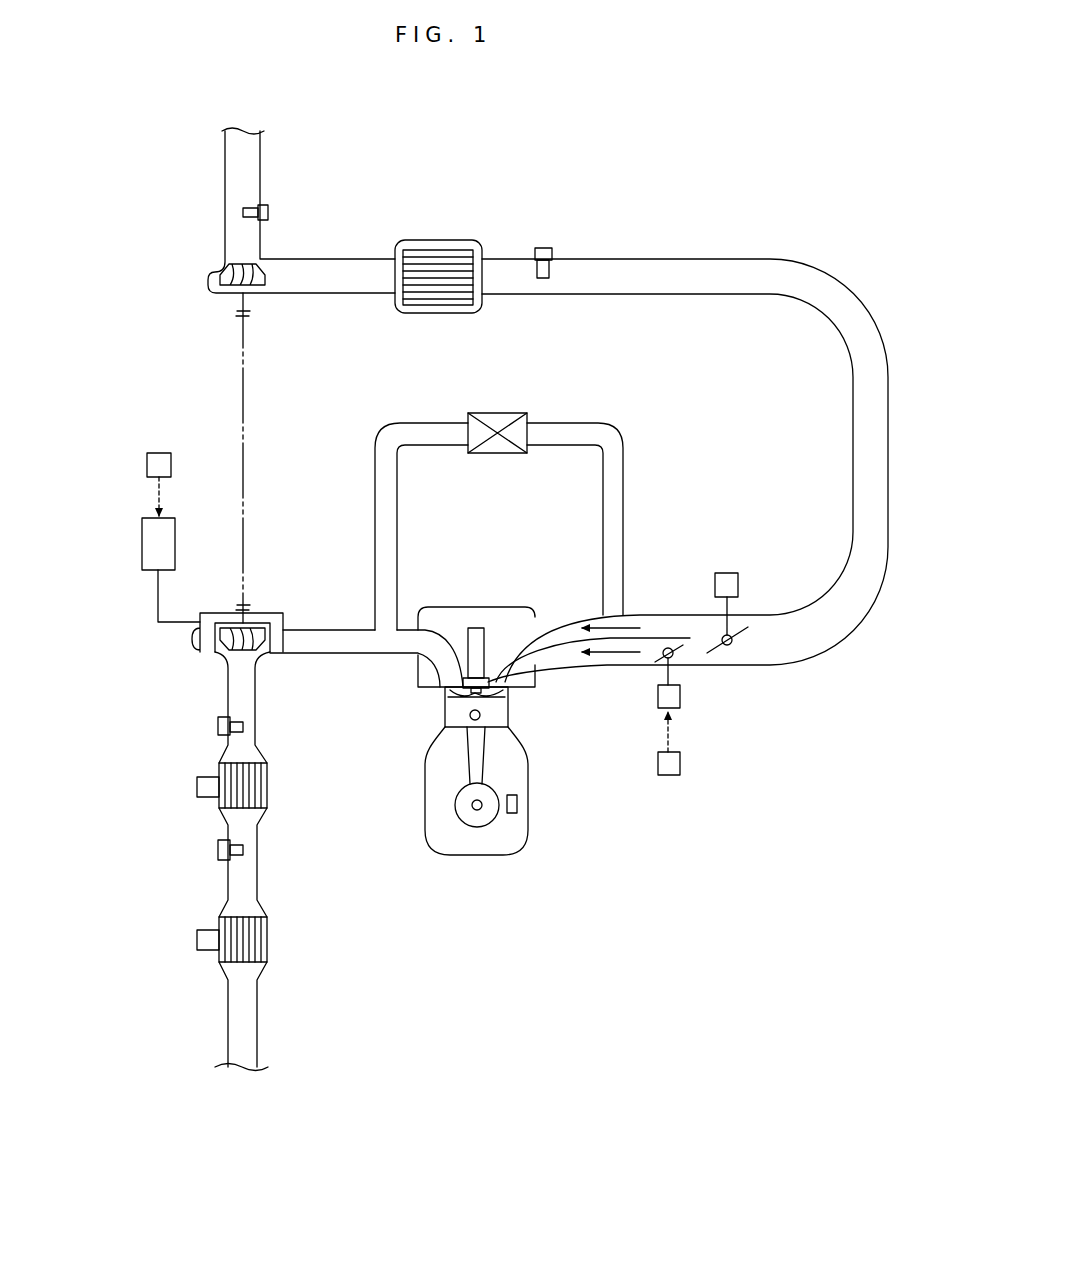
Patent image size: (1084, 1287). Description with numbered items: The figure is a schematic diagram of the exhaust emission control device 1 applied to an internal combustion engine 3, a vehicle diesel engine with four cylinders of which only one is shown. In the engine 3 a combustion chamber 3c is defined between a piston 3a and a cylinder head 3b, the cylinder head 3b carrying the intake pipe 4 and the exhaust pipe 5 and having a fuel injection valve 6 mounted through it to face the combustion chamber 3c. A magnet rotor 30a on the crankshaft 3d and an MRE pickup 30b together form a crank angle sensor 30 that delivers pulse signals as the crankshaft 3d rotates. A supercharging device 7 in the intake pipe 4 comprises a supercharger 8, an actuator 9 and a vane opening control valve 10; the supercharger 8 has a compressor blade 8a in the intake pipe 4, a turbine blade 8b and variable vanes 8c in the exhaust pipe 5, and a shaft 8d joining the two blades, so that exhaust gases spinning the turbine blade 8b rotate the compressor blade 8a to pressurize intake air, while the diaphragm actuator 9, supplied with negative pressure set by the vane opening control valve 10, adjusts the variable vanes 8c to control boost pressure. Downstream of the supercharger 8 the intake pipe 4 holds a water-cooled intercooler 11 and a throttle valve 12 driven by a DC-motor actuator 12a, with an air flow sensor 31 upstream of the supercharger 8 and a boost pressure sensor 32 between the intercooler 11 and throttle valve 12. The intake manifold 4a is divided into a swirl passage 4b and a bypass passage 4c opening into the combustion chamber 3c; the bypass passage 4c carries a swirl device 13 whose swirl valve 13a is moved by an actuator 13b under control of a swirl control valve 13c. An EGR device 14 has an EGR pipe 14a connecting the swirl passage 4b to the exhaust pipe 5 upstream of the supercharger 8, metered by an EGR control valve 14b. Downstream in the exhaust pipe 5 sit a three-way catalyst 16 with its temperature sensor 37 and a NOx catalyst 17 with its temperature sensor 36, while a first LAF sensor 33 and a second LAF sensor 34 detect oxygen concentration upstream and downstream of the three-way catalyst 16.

The exhaust emission control device 1 is at (141, 1115).
The internal combustion engine 3 is at (493, 752).
The piston 3a is at (515, 726).
The cylinder head 3b is at (503, 617).
The combustion chamber 3c is at (510, 700).
The crankshaft 3d is at (482, 806).
The intake pipe 4 is at (226, 170).
The intake manifold 4a is at (668, 615).
The swirl passage 4b is at (600, 652).
The bypass passage 4c is at (620, 663).
The exhaust pipe 5 is at (340, 655).
The fuel injection valve 6 is at (473, 627).
The supercharging device 7 is at (91, 759).
The supercharger 8 is at (239, 448).
The compressor blade 8a is at (270, 282).
The turbine blade 8b is at (262, 655).
The variable vanes 8c is at (208, 648).
The shaft 8d is at (243, 425).
The actuator 9 is at (142, 546).
The vane opening control valve 10 is at (147, 465).
The intercooler 11 is at (440, 240).
The throttle valve 12 is at (745, 627).
The actuator 12a is at (736, 573).
The swirl device 13 is at (729, 726).
The swirl valve 13a is at (685, 648).
The actuator 13b is at (680, 700).
The swirl control valve 13c is at (763, 712).
The EGR device 14 is at (463, 472).
The EGR pipe 14a is at (375, 508).
The EGR control valve 14b is at (482, 455).
The three-way catalyst 16 is at (267, 786).
The NOx catalyst 17 is at (267, 941).
The crank angle sensor 30 is at (501, 869).
The magnet rotor 30a is at (478, 828).
The MRE pickup 30b is at (512, 814).
The air flow sensor 31 is at (268, 212).
The boost pressure sensor 32 is at (545, 248).
The first LAF sensor 33 is at (218, 730).
The second LAF sensor 34 is at (218, 852).
The NOx catalyst temperature sensor 36 is at (197, 940).
The three-way catalyst temperature sensor 37 is at (197, 786).